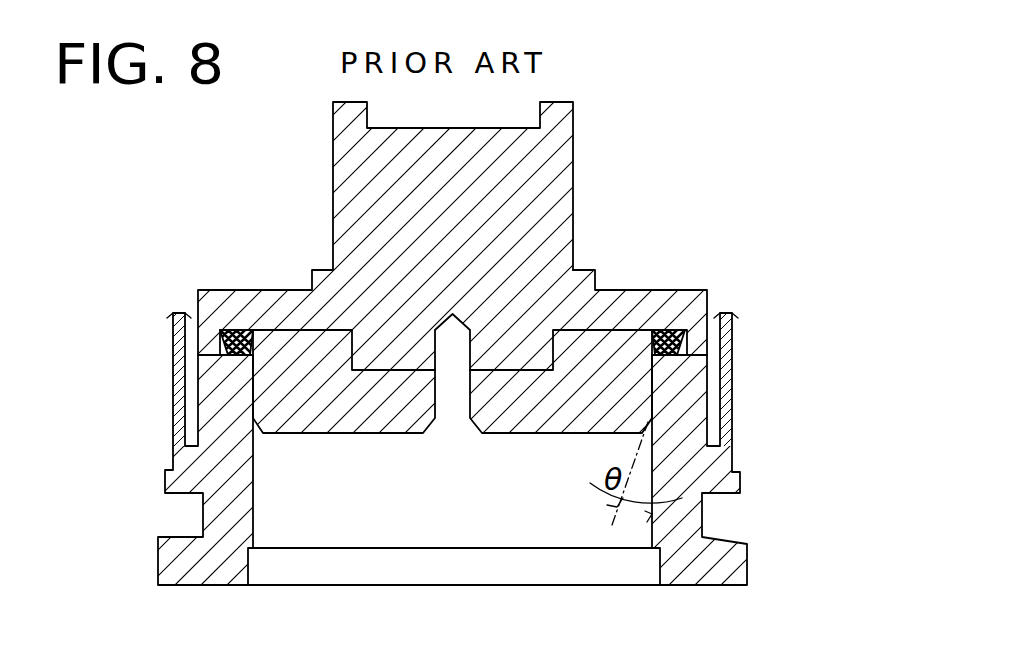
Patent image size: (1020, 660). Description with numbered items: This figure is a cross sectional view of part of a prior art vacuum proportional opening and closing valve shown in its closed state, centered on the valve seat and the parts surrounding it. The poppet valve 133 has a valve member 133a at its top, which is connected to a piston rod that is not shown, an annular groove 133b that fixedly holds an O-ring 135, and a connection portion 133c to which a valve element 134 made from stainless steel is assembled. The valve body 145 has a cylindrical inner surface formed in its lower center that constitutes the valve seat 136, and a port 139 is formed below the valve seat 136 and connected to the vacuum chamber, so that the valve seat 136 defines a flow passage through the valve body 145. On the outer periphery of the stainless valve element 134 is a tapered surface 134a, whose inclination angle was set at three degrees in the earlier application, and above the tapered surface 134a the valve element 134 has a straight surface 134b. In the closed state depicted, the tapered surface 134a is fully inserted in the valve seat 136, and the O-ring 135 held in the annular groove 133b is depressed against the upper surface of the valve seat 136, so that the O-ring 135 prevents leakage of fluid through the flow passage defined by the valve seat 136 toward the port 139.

The poppet valve 133 is at (594, 209).
The valve member 133a is at (537, 165).
The annular groove 133b is at (196, 292).
The connection portion 133c is at (570, 340).
The valve element 134 is at (340, 410).
The tapered surface 134a is at (253, 413).
The straight surface 134b is at (252, 380).
The O-ring 135 is at (230, 347).
The valve seat 136 is at (680, 378).
The port 139 is at (660, 567).
The valve body 145 is at (736, 480).